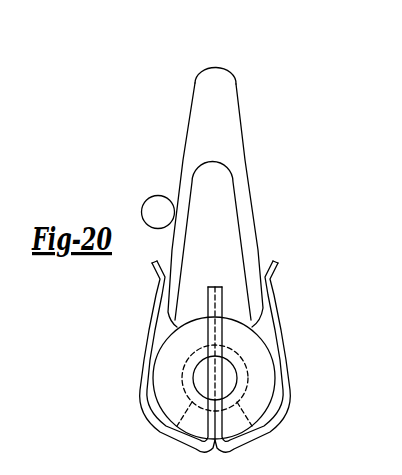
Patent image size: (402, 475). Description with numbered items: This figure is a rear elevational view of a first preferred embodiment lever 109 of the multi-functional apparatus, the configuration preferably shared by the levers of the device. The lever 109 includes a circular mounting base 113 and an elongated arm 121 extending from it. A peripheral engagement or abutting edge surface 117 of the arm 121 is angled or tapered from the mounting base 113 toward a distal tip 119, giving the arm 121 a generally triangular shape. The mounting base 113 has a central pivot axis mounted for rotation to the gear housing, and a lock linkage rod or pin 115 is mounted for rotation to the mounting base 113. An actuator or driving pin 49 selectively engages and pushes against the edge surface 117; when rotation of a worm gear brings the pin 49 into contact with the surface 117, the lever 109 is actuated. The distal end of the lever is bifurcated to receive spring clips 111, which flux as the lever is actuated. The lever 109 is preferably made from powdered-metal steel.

The lever 109 is at (225, 232).
The spring clips 111 is at (150, 329).
The circular mounting base 113 is at (257, 403).
The lock linkage rod or pin 115 is at (212, 377).
The peripheral engagement edge surface 117 is at (195, 88).
The distal tip 119 is at (215, 66).
The elongated arm 121 is at (202, 122).
The actuator or driving pin 49 is at (143, 207).